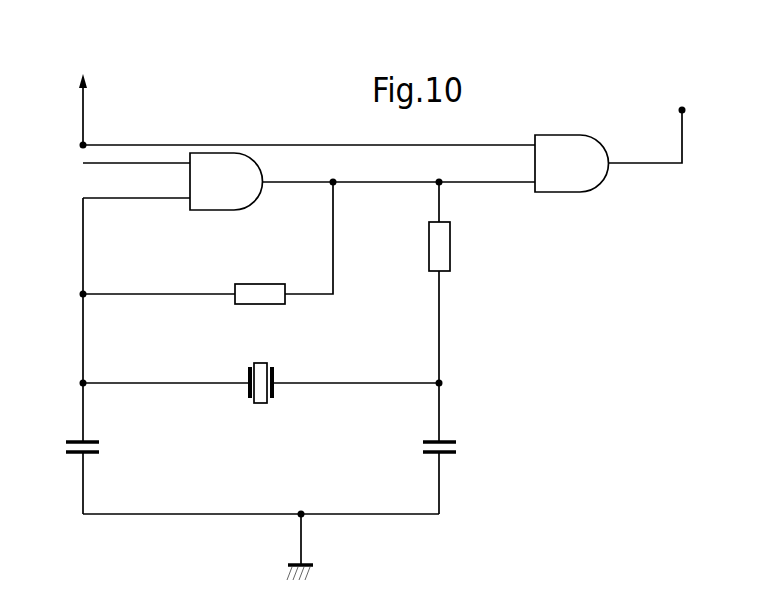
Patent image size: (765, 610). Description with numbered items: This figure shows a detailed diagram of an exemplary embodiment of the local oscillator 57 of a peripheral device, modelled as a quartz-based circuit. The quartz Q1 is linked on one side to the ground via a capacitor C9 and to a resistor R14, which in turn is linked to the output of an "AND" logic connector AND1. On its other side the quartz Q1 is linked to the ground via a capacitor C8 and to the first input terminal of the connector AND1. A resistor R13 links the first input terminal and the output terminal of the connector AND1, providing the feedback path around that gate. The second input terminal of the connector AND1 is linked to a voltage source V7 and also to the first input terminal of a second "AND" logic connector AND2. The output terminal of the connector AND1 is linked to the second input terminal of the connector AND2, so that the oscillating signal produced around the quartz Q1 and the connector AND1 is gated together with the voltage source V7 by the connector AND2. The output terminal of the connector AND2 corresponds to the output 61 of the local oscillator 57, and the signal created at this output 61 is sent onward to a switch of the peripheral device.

The local oscillator 57 is at (215, 100).
The output of the local oscillator 61 is at (682, 109).
The voltage source V7 is at (83, 100).
The "AND" logic connector AND1 is at (226, 181).
The "AND" logic connector AND2 is at (572, 163).
The resistor R13 is at (260, 283).
The resistor R14 is at (459, 246).
The quartz Q1 is at (262, 396).
The capacitor C8 is at (68, 447).
The capacitor C9 is at (454, 447).